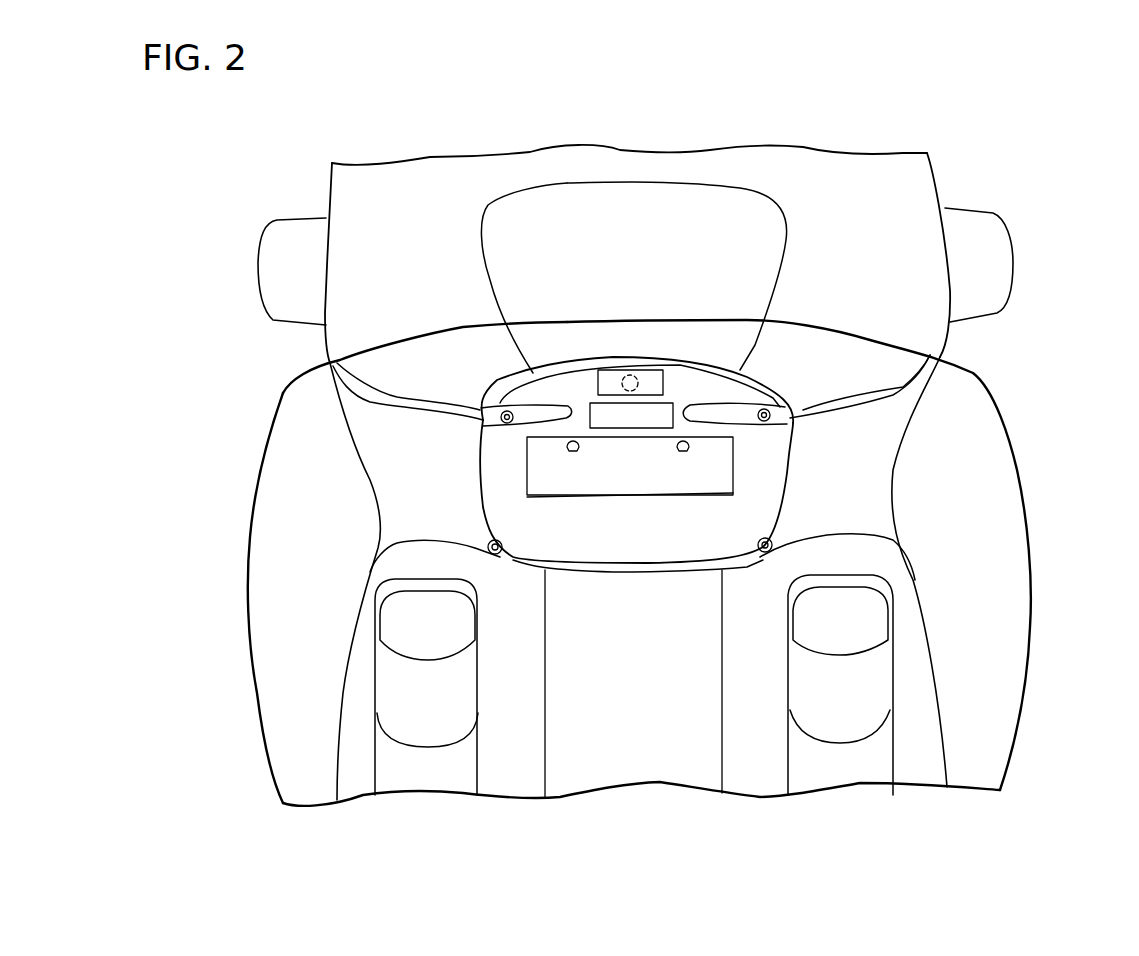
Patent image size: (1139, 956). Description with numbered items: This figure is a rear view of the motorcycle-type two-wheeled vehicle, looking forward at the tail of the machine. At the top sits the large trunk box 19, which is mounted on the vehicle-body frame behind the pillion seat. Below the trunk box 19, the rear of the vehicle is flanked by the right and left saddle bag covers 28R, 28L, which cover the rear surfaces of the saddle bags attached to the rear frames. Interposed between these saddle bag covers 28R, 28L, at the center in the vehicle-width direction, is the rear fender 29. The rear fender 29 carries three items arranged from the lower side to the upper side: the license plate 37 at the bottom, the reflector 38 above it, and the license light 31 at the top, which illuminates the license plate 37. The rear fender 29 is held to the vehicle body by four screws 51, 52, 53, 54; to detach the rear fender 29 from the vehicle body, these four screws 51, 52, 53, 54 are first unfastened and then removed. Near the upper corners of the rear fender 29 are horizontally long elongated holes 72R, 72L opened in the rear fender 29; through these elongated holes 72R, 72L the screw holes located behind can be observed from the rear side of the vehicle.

The trunk box 19 is at (920, 187).
The license light 31 is at (613, 380).
The screw 51 is at (493, 407).
The screw 52 is at (785, 406).
The elongated hole 72L is at (483, 413).
The elongated hole 72R is at (796, 434).
The saddle bag cover 28L is at (413, 482).
The saddle bag cover 28R is at (880, 465).
The rear fender 29 is at (760, 482).
The screw 53 is at (490, 547).
The screw 54 is at (767, 544).
The license plate 37 is at (630, 480).
The reflector 38 is at (650, 417).